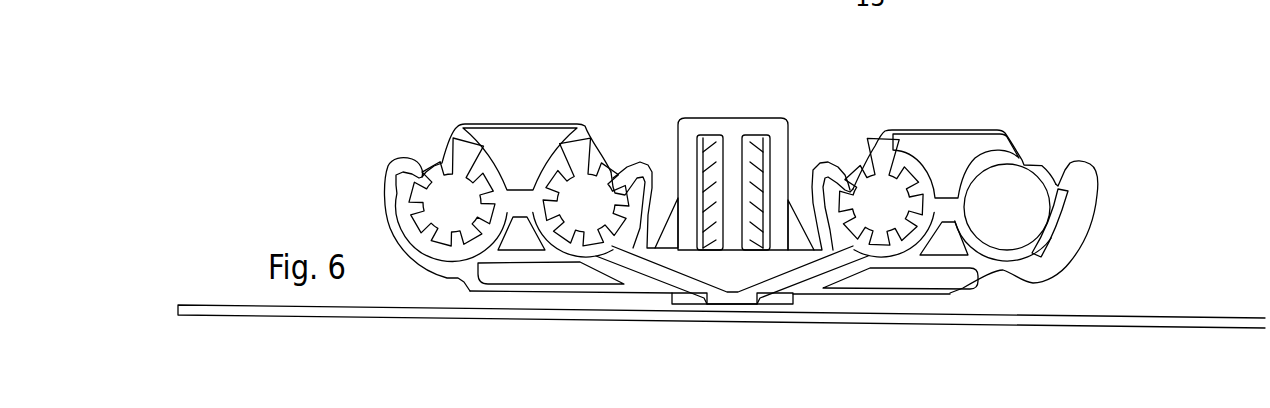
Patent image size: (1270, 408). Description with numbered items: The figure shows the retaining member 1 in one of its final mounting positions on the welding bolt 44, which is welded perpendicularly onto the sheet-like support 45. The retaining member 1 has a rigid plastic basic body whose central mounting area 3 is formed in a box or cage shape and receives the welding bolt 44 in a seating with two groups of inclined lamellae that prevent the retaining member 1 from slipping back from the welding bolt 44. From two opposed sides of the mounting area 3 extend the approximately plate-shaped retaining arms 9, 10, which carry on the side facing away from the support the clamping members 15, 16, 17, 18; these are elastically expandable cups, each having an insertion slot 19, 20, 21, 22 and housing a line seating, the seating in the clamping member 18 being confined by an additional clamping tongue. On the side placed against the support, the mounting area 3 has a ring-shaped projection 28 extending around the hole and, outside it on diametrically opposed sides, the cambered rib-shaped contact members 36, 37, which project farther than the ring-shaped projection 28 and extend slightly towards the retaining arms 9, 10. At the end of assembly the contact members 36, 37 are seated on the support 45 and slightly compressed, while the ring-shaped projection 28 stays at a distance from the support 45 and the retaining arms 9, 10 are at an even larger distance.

The retaining member 1 is at (646, 116).
The central mounting area 3 is at (741, 124).
The retaining arm 9 is at (522, 290).
The retaining arm 10 is at (920, 292).
The clamping member 15 is at (553, 146).
The clamping member 16 is at (488, 137).
The clamping member 17 is at (907, 151).
The clamping member 18 is at (984, 156).
The insertion slot 19 is at (606, 158).
The insertion slot 20 is at (422, 150).
The insertion slot 21 is at (854, 157).
The insertion slot 22 is at (1035, 162).
The ring-shaped projection 28 is at (683, 308).
The rib-shaped contact member 36 is at (730, 307).
The rib-shaped contact member 37 is at (735, 347).
The welding bolt 44 is at (748, 160).
The sheet-like support 45 is at (888, 320).